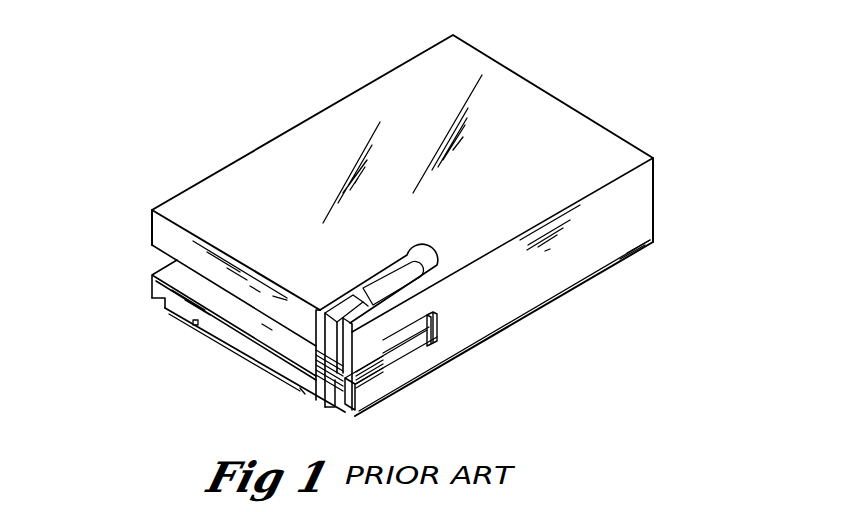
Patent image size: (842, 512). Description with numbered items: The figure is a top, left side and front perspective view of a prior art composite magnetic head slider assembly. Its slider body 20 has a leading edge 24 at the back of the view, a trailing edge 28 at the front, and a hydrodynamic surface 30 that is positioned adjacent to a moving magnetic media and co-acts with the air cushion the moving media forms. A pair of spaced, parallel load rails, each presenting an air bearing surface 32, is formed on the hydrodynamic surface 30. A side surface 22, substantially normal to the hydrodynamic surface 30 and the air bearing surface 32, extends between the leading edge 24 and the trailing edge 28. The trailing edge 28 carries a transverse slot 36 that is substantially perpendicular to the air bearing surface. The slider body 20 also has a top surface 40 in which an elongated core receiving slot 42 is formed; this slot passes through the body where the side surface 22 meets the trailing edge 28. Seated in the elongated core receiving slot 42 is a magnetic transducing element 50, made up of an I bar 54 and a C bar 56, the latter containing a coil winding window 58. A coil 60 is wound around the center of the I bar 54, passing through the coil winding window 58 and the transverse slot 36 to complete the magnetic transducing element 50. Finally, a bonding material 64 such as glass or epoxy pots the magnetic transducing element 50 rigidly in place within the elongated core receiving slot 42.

The slider body 20 is at (397, 88).
The side surface 22 is at (628, 226).
The leading edge 24 is at (520, 72).
The trailing edge 28 is at (167, 233).
The hydrodynamic surface 30 is at (262, 331).
The air bearing surface 32 is at (177, 318).
The transverse slot 36 is at (267, 328).
The top surface 40 is at (613, 152).
The elongated core receiving slot 42 is at (436, 267).
The magnetic transducing element 50 is at (319, 402).
The I bar 54 is at (327, 410).
The C bar 56 is at (440, 337).
The coil winding window 58 is at (387, 352).
The coil 60 is at (378, 375).
The bonding material 64 is at (318, 383).